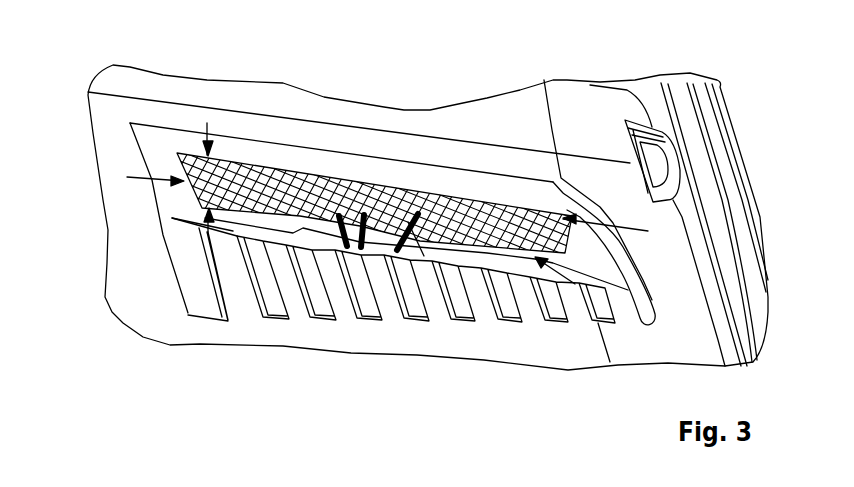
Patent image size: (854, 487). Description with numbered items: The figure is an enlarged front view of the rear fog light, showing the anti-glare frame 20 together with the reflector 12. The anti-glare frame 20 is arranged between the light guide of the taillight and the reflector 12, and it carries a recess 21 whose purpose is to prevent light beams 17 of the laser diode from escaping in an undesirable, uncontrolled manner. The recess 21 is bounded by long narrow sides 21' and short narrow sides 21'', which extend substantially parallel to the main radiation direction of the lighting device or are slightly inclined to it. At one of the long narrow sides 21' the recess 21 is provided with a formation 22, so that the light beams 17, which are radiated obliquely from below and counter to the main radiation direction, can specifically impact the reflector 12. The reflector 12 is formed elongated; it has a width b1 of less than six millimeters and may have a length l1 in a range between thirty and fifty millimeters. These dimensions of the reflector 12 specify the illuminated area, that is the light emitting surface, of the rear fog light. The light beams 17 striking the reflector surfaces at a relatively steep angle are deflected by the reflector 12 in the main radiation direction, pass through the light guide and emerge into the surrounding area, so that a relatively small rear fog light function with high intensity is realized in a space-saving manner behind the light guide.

The reflector 12 is at (364, 182).
The light beams 17 is at (414, 243).
The anti-glare frame 20 is at (170, 218).
The recess 21 is at (426, 329).
The long narrow sides 21' is at (505, 363).
The short narrow sides 21'' is at (686, 202).
The formation 22 is at (300, 228).
The length l1 is at (152, 180).
The width b1 is at (207, 123).